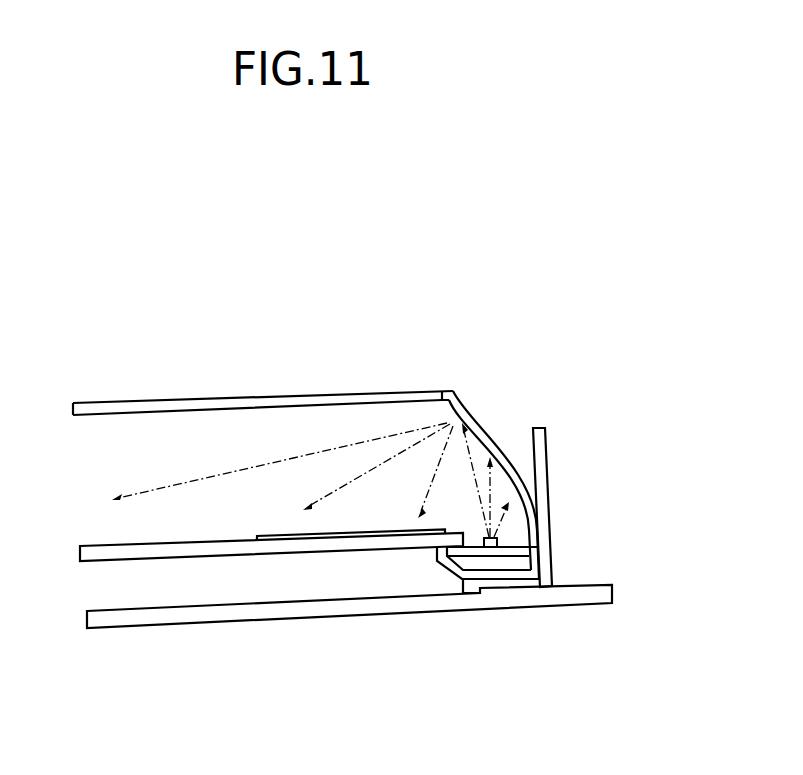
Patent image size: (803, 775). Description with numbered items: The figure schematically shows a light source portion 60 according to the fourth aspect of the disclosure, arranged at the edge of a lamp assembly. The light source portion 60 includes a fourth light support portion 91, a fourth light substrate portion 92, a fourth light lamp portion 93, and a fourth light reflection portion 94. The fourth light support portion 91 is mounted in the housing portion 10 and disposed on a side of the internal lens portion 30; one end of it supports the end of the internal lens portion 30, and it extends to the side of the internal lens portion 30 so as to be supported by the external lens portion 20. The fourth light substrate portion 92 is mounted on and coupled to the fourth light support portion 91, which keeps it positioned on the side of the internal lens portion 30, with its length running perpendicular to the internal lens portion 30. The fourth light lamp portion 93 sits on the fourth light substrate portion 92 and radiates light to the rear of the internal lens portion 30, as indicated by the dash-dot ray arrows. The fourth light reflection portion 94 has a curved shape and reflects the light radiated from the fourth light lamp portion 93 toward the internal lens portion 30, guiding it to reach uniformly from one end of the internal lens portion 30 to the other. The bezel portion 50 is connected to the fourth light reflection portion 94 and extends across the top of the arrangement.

The housing portion 10 is at (545, 447).
The external lens portion 20 is at (153, 625).
The internal lens portion 30 is at (267, 556).
The bezel portion 50 is at (310, 396).
The light source portion 60 is at (481, 577).
The fourth light support portion 91 is at (453, 569).
The fourth light substrate portion 92 is at (524, 556).
The fourth light lamp portion 93 is at (490, 547).
The fourth light reflection portion 94 is at (520, 483).